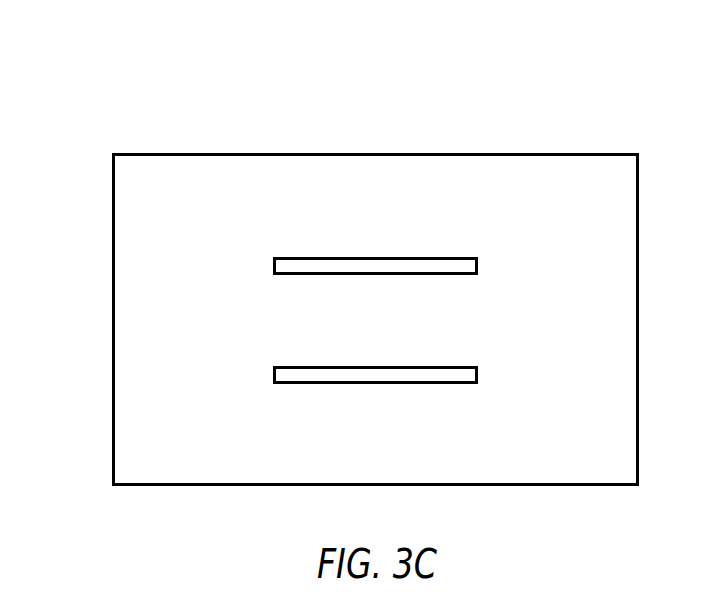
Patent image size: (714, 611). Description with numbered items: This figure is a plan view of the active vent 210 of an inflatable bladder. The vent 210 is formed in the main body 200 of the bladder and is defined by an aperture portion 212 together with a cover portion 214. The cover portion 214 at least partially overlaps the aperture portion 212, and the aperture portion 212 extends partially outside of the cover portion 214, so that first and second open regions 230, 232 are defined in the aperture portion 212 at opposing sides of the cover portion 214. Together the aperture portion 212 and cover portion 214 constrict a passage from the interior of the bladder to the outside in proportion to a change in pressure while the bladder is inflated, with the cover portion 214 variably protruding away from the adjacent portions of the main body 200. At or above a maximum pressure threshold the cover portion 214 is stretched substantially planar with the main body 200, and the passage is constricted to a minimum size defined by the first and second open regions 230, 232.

The main body 200 is at (143, 168).
The active vent 210 is at (485, 302).
The aperture portion 212 is at (435, 255).
The cover portion 214 is at (312, 317).
The first open region 230 is at (303, 265).
The second open region 232 is at (305, 372).